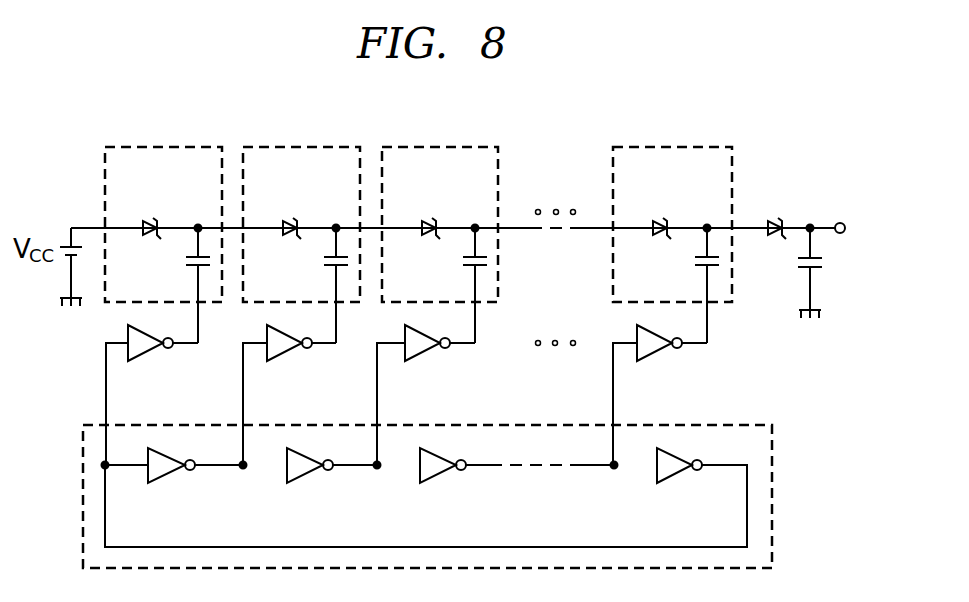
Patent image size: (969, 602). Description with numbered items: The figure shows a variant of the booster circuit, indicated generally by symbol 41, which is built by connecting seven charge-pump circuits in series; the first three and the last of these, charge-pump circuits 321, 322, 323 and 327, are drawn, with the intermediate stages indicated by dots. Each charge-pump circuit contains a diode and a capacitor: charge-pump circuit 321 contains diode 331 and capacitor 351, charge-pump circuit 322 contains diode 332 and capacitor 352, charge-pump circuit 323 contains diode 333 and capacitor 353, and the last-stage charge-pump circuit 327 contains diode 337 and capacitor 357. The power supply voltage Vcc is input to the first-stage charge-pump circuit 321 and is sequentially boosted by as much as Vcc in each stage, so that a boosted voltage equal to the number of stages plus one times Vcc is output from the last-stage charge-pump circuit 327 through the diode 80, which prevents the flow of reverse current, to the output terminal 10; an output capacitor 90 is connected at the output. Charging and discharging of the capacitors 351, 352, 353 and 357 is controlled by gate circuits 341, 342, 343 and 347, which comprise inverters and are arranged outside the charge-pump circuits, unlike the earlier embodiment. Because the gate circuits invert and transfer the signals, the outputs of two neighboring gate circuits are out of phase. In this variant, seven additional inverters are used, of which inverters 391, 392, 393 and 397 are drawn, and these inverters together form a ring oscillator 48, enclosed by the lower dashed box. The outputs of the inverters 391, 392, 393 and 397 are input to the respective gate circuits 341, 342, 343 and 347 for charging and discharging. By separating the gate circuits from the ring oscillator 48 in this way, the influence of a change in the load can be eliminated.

The booster circuit variant 41 is at (560, 63).
The charge-pump circuit 321 is at (163, 211).
The charge-pump circuit 322 is at (301, 211).
The charge-pump circuit 323 is at (440, 211).
The charge-pump circuit 327 is at (672, 211).
The diode 331 is at (139, 198).
The diode 332 is at (279, 198).
The diode 333 is at (418, 198).
The diode 337 is at (649, 198).
The capacitor 351 is at (164, 284).
The capacitor 352 is at (302, 284).
The capacitor 353 is at (441, 284).
The capacitor 357 is at (673, 284).
The gate circuit 341 is at (152, 395).
The gate circuit 342 is at (289, 395).
The gate circuit 343 is at (426, 395).
The gate circuit 347 is at (660, 395).
The inverter 391 is at (176, 495).
The inverter 392 is at (315, 495).
The inverter 393 is at (449, 495).
The inverter 397 is at (685, 495).
The ring oscillator 48 is at (459, 496).
The diode 80 is at (768, 199).
The output capacitor 90 is at (841, 273).
The output terminal 10 is at (836, 196).